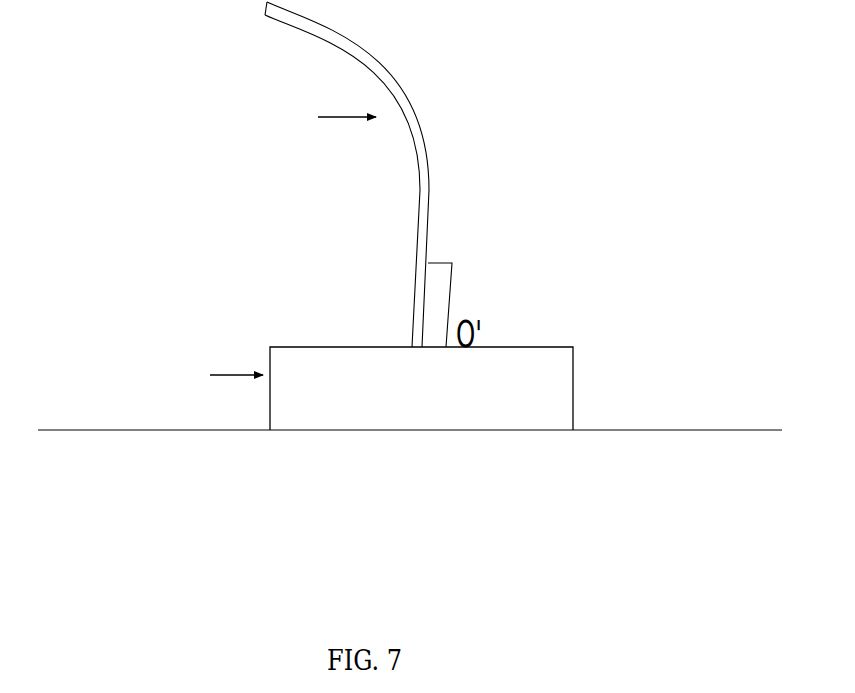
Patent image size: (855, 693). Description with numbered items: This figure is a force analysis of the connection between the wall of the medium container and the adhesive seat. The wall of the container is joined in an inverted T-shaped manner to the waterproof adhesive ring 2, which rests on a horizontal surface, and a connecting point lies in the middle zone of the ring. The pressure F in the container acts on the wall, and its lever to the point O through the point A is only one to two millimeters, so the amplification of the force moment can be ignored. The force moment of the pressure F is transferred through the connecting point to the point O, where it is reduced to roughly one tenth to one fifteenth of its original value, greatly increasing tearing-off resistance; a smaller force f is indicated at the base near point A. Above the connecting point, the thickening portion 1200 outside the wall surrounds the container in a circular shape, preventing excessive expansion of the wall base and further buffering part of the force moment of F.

The thickening portion 1200 is at (451, 287).
The waterproof adhesive ring 2 is at (500, 421).
The pressure F is at (336, 133).
The force f is at (224, 390).
The point A is at (265, 333).
The point O is at (272, 457).